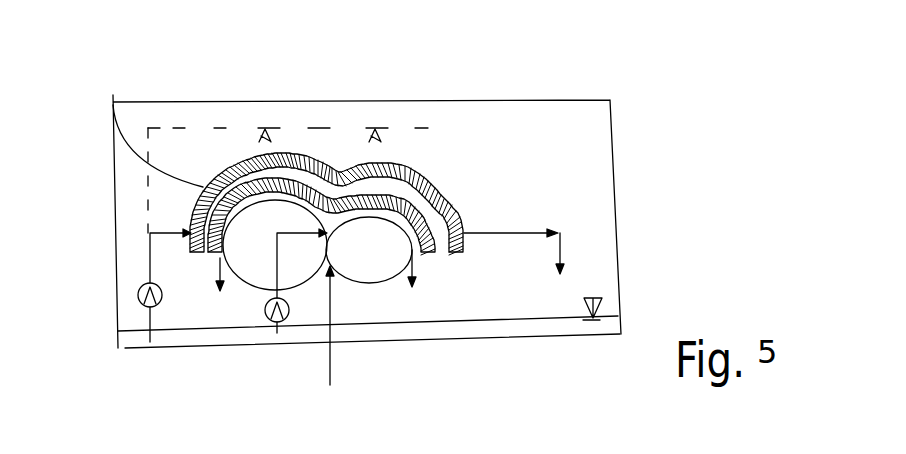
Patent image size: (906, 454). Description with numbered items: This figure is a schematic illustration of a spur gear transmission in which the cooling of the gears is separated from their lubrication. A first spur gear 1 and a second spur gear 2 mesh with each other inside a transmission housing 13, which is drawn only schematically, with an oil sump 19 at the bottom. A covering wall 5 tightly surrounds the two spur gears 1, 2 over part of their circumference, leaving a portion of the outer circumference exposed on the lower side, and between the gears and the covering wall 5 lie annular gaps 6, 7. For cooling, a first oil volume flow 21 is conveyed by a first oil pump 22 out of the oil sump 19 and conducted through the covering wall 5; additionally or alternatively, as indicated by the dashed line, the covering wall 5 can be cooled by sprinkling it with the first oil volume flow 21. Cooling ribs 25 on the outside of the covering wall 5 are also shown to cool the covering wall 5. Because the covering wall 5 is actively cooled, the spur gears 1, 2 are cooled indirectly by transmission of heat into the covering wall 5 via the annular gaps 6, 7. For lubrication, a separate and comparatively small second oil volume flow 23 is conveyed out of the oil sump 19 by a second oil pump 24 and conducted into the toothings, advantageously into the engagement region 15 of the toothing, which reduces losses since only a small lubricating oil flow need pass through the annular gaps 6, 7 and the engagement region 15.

The first spur gear 1 is at (305, 278).
The second spur gear 2 is at (372, 285).
The covering wall 5 is at (433, 182).
The annular gap 6 is at (297, 192).
The annular gap 7 is at (390, 207).
The transmission housing 13 is at (580, 98).
The engagement region 15 is at (335, 341).
The oil sump 19 is at (511, 328).
The first oil volume flow 21 is at (178, 128).
The first oil pump 22 is at (140, 302).
The second oil volume flow 23 is at (265, 282).
The second oil pump 24 is at (265, 302).
The cooling ribs 25 is at (468, 43).